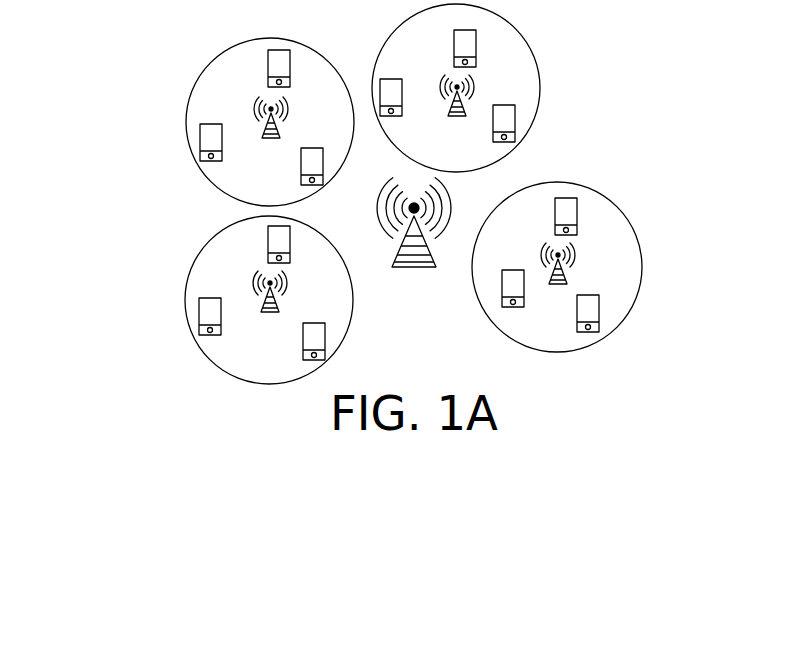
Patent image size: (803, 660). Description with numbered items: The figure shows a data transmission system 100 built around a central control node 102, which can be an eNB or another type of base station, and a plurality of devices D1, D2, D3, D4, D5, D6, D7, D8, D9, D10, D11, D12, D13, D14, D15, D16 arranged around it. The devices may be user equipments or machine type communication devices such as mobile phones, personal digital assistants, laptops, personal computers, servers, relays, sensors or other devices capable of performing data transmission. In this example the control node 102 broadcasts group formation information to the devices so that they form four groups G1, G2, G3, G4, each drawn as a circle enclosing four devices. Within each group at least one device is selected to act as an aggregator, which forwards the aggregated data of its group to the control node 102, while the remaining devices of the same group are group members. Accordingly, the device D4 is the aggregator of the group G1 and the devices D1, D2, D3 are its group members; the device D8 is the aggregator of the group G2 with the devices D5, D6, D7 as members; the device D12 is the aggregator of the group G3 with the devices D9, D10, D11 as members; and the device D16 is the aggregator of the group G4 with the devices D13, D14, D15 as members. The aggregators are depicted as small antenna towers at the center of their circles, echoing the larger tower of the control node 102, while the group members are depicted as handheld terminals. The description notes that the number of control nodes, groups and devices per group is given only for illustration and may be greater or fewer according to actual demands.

The data transmission system 100 is at (83, 24).
The control node 102 is at (414, 275).
The group G1 is at (640, 243).
The group G2 is at (538, 64).
The group G3 is at (189, 100).
The group G4 is at (189, 278).
The device D1 is at (512, 307).
The device D2 is at (598, 302).
The device D3 is at (577, 229).
The device D4 is at (575, 253).
The device D5 is at (390, 117).
The device D6 is at (476, 49).
The device D7 is at (515, 122).
The device D8 is at (477, 85).
The device D9 is at (200, 144).
The device D10 is at (268, 68).
The device D11 is at (300, 165).
The device D12 is at (252, 108).
The device D13 is at (199, 320).
The device D14 is at (268, 249).
The device D15 is at (303, 343).
The device D16 is at (252, 283).